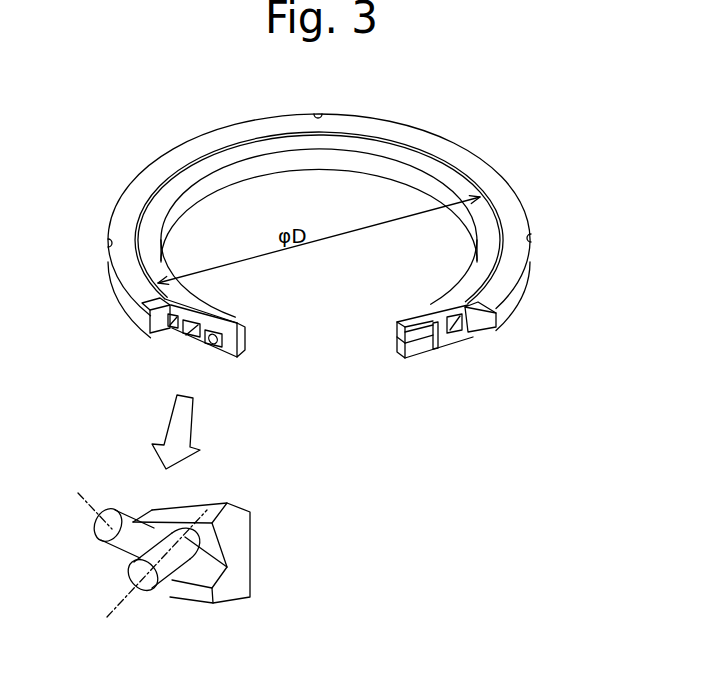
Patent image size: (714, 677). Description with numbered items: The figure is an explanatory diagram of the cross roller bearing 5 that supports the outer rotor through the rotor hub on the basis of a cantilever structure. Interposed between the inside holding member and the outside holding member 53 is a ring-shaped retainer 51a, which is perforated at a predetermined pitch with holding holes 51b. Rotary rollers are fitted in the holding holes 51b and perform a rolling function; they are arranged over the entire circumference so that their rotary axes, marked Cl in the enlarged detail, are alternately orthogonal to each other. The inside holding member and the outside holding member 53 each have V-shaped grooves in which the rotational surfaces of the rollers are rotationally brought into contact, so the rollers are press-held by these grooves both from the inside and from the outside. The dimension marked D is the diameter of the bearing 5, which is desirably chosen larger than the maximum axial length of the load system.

The bearing 5 is at (566, 272).
The retainer 51a is at (438, 352).
The holding hole 51b is at (430, 323).
The outside holding member 53 is at (490, 315).